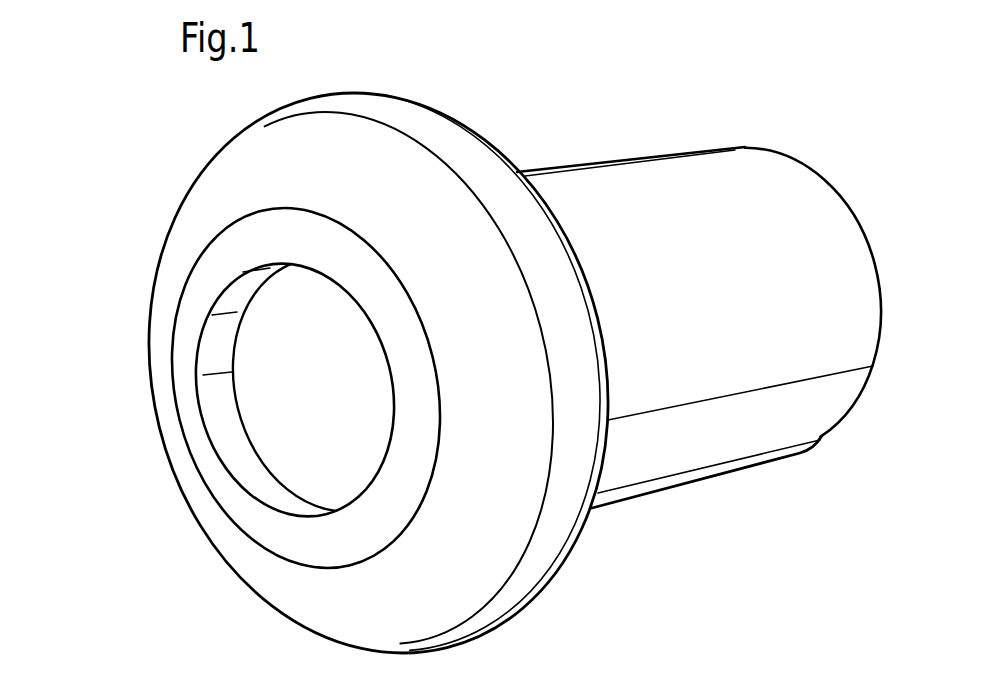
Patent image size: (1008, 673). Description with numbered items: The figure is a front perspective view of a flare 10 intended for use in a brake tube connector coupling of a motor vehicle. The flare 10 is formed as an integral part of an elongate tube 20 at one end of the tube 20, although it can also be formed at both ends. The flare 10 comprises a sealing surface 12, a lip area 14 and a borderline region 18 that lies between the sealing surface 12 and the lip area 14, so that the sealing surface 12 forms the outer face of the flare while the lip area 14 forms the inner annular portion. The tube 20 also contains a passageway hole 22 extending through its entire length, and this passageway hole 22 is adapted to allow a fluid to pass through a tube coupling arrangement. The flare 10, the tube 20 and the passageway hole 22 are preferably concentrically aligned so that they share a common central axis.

The flare 10 is at (145, 568).
The sealing surface 12 is at (257, 183).
The lip area 14 is at (210, 277).
The borderline region 18 is at (175, 412).
The elongate tube 20 is at (723, 252).
The passageway hole 22 is at (345, 347).